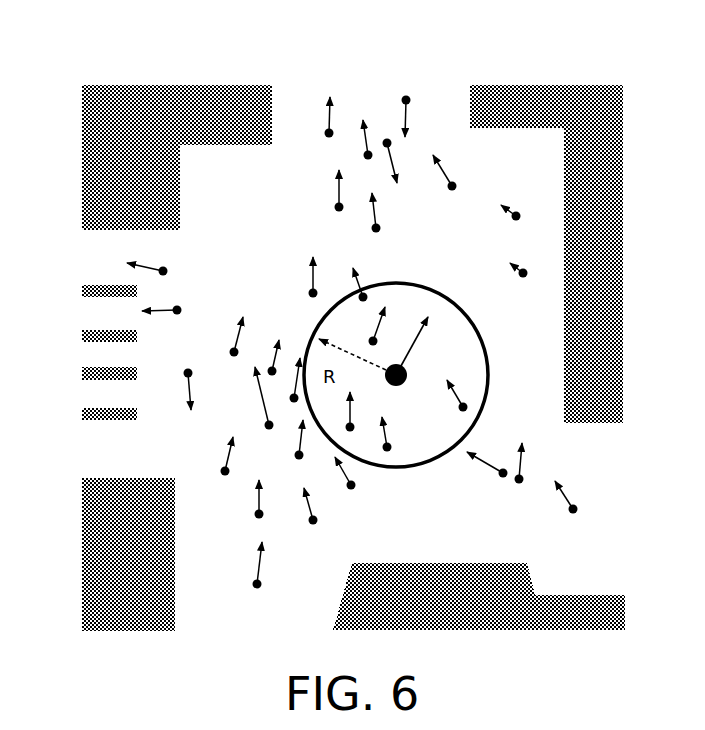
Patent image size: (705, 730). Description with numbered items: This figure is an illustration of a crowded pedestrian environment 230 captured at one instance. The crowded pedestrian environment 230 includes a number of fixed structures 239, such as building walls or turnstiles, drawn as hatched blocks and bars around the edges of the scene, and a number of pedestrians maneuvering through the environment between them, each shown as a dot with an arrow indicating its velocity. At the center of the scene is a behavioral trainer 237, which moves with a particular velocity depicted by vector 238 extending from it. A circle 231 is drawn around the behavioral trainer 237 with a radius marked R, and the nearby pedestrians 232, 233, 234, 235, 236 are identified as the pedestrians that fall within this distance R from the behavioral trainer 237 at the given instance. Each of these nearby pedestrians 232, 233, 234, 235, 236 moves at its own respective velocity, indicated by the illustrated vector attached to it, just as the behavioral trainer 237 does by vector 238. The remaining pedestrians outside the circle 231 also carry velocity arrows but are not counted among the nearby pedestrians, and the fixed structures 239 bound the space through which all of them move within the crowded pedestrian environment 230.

The crowded pedestrian environment 230 is at (644, 78).
The circular region of radius R 231 is at (476, 329).
The nearby pedestrian 232 is at (466, 409).
The nearby pedestrian 233 is at (352, 432).
The nearby pedestrian 234 is at (391, 447).
The nearby pedestrian 235 is at (376, 340).
The nearby pedestrian 236 is at (366, 295).
The behavioral trainer 237 is at (394, 386).
The vector 238 is at (413, 348).
The fixed structures 239 is at (82, 166).